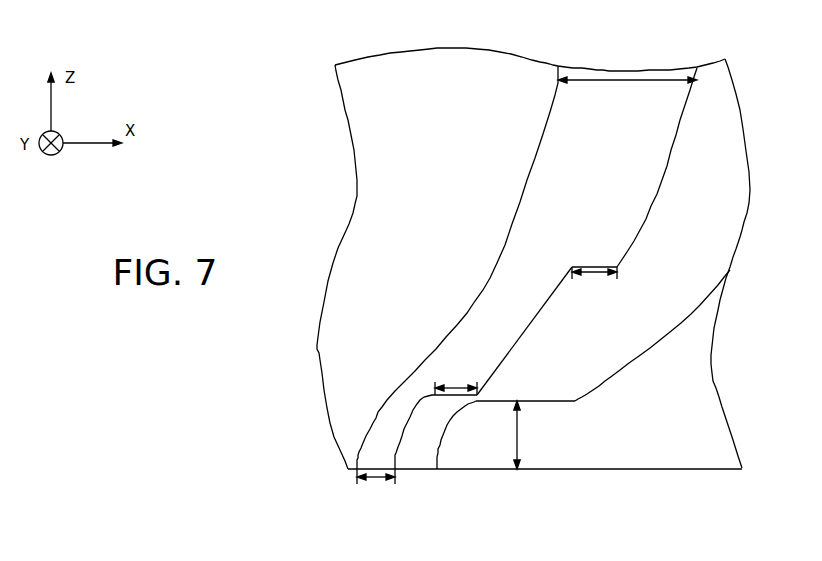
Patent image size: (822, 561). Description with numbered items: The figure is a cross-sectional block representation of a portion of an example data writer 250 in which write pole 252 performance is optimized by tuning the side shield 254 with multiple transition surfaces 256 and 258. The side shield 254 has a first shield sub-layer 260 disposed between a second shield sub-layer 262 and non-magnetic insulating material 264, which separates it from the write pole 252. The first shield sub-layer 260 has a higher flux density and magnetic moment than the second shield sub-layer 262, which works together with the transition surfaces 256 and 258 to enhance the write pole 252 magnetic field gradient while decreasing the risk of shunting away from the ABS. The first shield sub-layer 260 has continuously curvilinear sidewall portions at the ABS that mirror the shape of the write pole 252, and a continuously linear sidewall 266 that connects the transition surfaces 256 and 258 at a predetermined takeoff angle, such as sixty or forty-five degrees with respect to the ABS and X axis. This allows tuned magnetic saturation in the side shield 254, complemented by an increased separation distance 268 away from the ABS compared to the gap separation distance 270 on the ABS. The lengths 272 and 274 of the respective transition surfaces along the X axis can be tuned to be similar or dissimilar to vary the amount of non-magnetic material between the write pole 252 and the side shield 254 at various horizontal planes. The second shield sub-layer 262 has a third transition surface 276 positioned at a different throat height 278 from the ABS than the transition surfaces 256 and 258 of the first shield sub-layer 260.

The data writer 250 is at (690, 46).
The write pole 252 is at (437, 88).
The side shield 254 is at (717, 248).
The transition surface 256 is at (444, 396).
The transition surface 258 is at (594, 266).
The first shield sub-layer 260 is at (697, 103).
The second shield sub-layer 262 is at (560, 371).
The non-magnetic insulating material 264 is at (546, 268).
The linear sidewall 266 is at (521, 337).
The separation distance 268 is at (627, 90).
The gap separation distance 270 is at (376, 488).
The length 272 is at (456, 380).
The length 274 is at (594, 282).
The third transition surface 276 is at (569, 400).
The throat height 278 is at (535, 435).